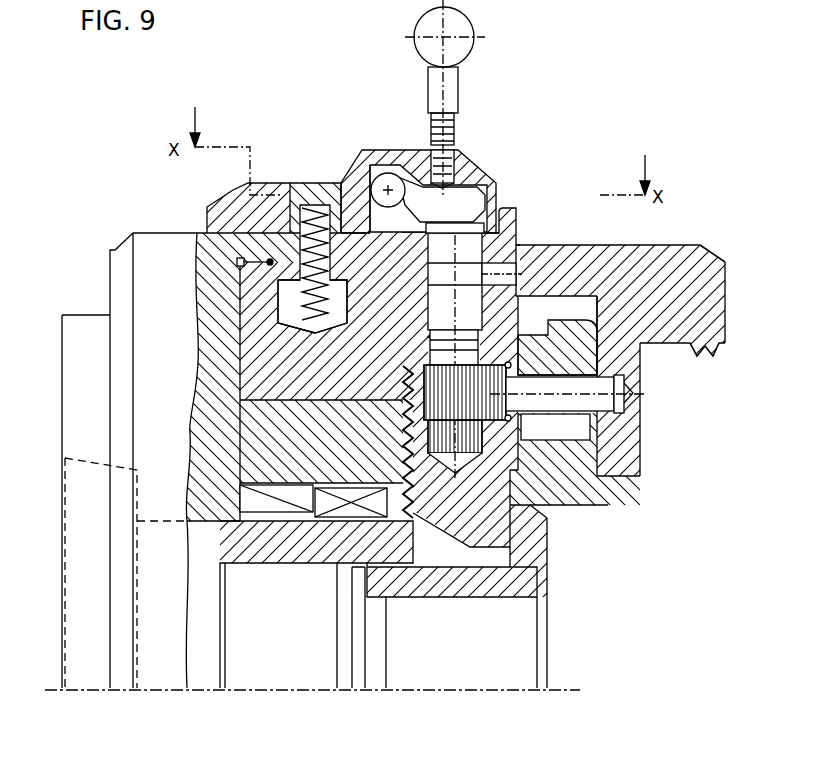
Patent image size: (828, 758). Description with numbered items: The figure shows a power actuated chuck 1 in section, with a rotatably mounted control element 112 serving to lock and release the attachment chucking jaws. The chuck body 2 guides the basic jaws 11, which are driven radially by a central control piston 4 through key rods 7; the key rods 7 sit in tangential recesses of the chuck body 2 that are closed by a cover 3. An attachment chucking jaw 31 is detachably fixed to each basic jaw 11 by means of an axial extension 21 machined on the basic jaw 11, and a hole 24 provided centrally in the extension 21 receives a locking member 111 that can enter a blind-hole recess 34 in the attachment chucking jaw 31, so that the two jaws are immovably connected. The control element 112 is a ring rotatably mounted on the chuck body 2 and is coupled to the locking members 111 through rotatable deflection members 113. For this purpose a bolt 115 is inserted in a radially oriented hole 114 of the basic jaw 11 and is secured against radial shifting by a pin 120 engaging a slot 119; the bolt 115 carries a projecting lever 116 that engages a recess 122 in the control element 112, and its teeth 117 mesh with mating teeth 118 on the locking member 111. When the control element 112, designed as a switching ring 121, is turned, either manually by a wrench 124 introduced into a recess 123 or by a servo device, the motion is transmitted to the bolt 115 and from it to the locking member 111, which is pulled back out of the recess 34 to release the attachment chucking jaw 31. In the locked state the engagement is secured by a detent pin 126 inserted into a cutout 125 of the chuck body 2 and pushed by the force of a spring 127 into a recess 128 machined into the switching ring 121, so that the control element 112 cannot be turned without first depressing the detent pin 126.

The power actuated chuck 1 is at (96, 132).
The chuck body 2 is at (255, 362).
The cover 3 is at (150, 451).
The control piston 4 is at (380, 550).
The key rod 7 is at (250, 438).
The basic jaw 11 is at (511, 216).
The axial extension 21 is at (684, 247).
The hole 24 is at (636, 477).
The attachment chucking jaw 31 is at (709, 247).
The recess 34 is at (637, 438).
The locking member 111 is at (578, 378).
The control element 112 is at (491, 163).
The deflection member 113 is at (587, 247).
The radially oriented hole 114 is at (402, 356).
The bolt 115 is at (632, 247).
The projecting lever 116 is at (396, 173).
The teeth 117 is at (453, 476).
The teeth 118 is at (583, 507).
The slot 119 is at (386, 330).
The pin 120 is at (527, 243).
The switching ring 121 is at (357, 183).
The recess 122 is at (372, 167).
The recess 123 is at (442, 170).
The wrench 124 is at (452, 90).
The cutout 125 is at (200, 262).
The detent pin 126 is at (285, 180).
The spring 127 is at (305, 300).
The recess 128 is at (300, 213).